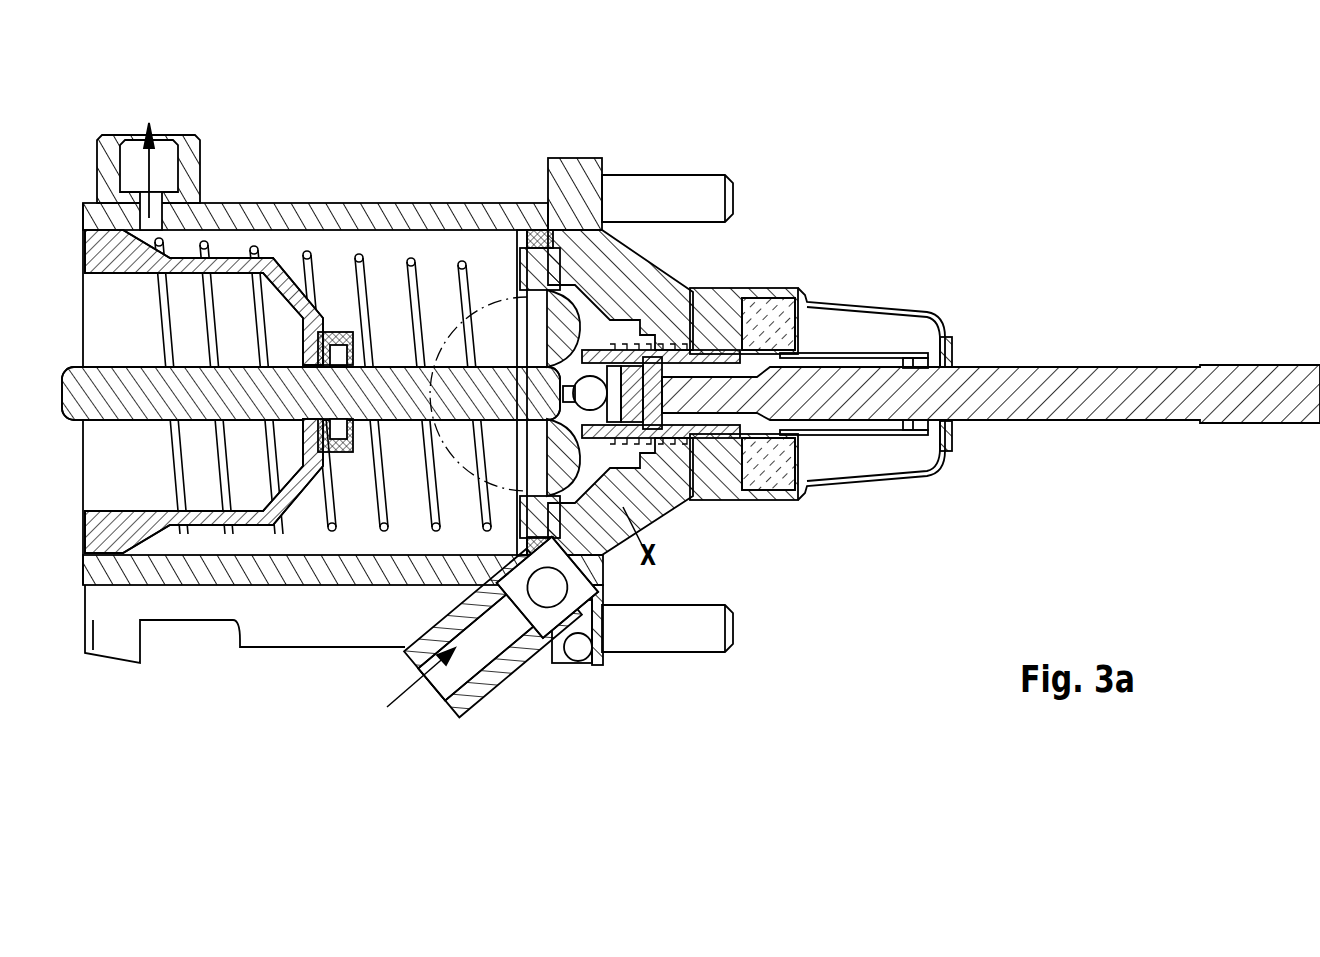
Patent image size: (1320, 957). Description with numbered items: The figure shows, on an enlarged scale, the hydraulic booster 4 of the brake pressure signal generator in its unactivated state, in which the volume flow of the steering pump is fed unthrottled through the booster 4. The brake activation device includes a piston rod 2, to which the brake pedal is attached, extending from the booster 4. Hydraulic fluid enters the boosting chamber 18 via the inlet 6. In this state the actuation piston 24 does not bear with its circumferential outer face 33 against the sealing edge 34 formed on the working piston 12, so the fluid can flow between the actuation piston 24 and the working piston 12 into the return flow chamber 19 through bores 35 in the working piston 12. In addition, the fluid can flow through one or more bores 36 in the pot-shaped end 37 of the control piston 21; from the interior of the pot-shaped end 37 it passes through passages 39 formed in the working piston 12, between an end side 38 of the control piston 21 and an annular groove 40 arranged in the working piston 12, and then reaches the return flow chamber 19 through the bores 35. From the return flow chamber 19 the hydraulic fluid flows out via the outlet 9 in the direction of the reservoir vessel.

The piston rod 2 is at (1068, 390).
The hydraulic booster 4 is at (350, 145).
The inlet 6 is at (467, 673).
The outlet 9 is at (165, 147).
The working piston 12 is at (513, 247).
The boosting chamber 18 is at (680, 494).
The return flow chamber 19 is at (313, 538).
The control piston 21 is at (884, 437).
The actuation piston 24 is at (612, 257).
The circumferential outer face 33 is at (566, 231).
The sealing edge 34 is at (593, 557).
The bores 35 is at (560, 308).
The bores 36 is at (660, 325).
The pot-shaped end 37 is at (663, 513).
The end side 38 is at (570, 346).
The passages 39 is at (637, 323).
The annular groove 40 is at (565, 425).